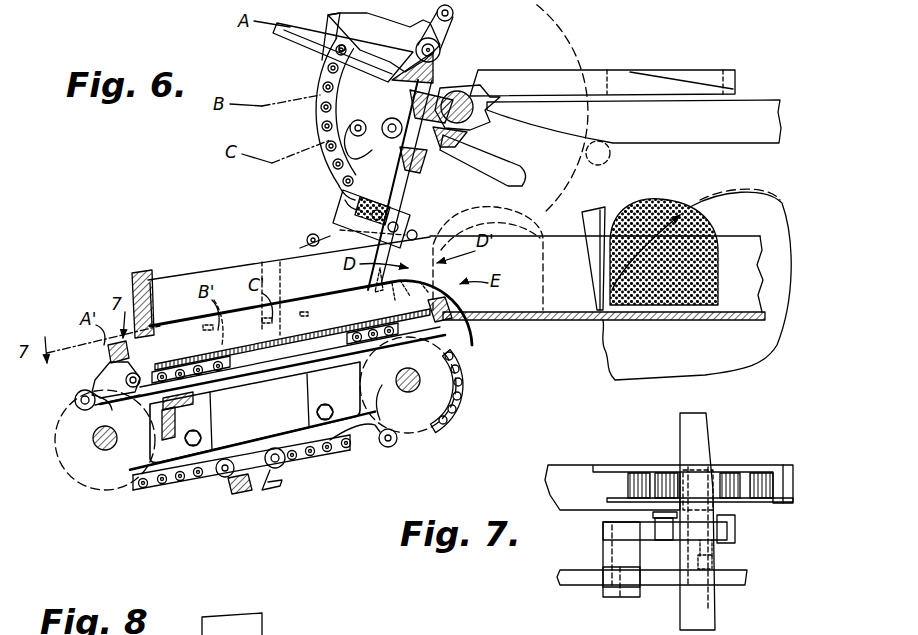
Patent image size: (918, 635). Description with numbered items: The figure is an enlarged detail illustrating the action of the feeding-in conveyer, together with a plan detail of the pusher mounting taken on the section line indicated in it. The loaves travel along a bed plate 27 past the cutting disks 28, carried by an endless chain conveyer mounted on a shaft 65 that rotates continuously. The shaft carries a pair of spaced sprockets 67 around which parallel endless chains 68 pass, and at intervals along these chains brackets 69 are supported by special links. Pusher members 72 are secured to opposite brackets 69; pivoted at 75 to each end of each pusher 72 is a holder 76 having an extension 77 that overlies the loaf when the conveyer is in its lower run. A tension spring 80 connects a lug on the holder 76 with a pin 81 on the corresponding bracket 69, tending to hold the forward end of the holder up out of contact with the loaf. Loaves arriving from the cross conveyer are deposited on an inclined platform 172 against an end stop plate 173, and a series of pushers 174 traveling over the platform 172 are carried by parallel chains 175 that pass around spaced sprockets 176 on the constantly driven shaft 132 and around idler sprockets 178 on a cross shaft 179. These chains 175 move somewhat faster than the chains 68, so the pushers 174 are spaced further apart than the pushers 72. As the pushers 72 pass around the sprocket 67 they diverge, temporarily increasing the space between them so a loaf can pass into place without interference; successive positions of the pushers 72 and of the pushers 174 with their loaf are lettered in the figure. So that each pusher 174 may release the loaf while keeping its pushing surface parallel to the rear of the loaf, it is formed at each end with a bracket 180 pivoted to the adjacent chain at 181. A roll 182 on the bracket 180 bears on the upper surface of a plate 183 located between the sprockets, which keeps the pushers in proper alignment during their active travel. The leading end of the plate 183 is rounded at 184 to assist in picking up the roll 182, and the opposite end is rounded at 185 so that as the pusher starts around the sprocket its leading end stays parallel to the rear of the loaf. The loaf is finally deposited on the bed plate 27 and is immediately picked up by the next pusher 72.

In FIG. 6, the bed plate 27 is at (565, 322).
In FIG. 6, the cutting disks 28 is at (632, 368).
In FIG. 6, the shaft 65 is at (470, 95).
In FIG. 6, the sprockets 67 is at (340, 72).
In FIG. 6, the endless chains 68 is at (322, 120).
In FIG. 6, the brackets 69 is at (335, 210).
In FIG. 6, the pusher members 72 is at (295, 42).
In FIG. 6, the pivot 75 is at (392, 118).
In FIG. 6, the holder 76 is at (355, 126).
In FIG. 6, the extension 77 is at (498, 168).
In FIG. 6, the tension spring 80 is at (335, 190).
In FIG. 6, the pin 81 is at (306, 238).
In FIG. 6, the constantly driven shaft 132 is at (98, 448).
In FIG. 6, the platform 172 is at (268, 312).
In FIG. 6, the end stop plate 173 is at (300, 308).
In FIG. 6, the pushers 174 is at (122, 352).
In FIG. 7, the pushers 174 is at (702, 608).
In FIG. 6, the chains 175 is at (318, 470).
In FIG. 7, the chains 175 is at (768, 465).
In FIG. 6, the sprockets 176 is at (100, 475).
In FIG. 6, the idler sprockets 178 is at (432, 422).
In FIG. 6, the cross shaft 179 is at (400, 430).
In FIG. 6, the bracket 180 is at (118, 369).
In FIG. 7, the bracket 180 is at (635, 528).
In FIG. 6, the pivot 181 is at (133, 390).
In FIG. 7, the pivot 181 is at (723, 545).
In FIG. 6, the roll 182 is at (74, 398).
In FIG. 7, the roll 182 is at (603, 578).
In FIG. 6, the plate 183 is at (240, 378).
In FIG. 6, the rounded leading end 184 is at (92, 420).
In FIG. 6, the rounded opposite end 185 is at (394, 394).